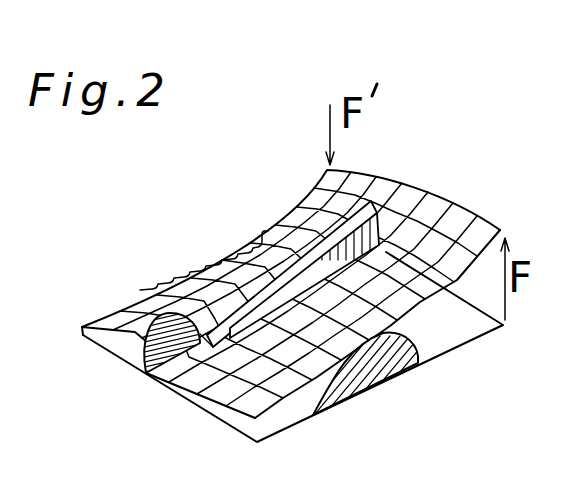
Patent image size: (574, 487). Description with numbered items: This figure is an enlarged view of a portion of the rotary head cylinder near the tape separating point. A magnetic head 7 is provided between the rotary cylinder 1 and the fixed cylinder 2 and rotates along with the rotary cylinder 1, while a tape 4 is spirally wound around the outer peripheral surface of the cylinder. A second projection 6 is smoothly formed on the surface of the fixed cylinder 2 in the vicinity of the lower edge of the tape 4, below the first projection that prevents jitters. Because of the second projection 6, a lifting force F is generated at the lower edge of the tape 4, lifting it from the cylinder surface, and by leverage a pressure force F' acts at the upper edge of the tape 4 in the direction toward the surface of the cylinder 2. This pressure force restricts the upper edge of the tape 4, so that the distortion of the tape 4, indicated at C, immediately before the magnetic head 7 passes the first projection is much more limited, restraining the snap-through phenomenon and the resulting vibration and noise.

The rotary cylinder 1 is at (336, 228).
The fixed cylinder 2 is at (178, 394).
The tape 4 is at (395, 180).
The second projection 6 is at (370, 374).
The magnetic head 7 is at (142, 362).